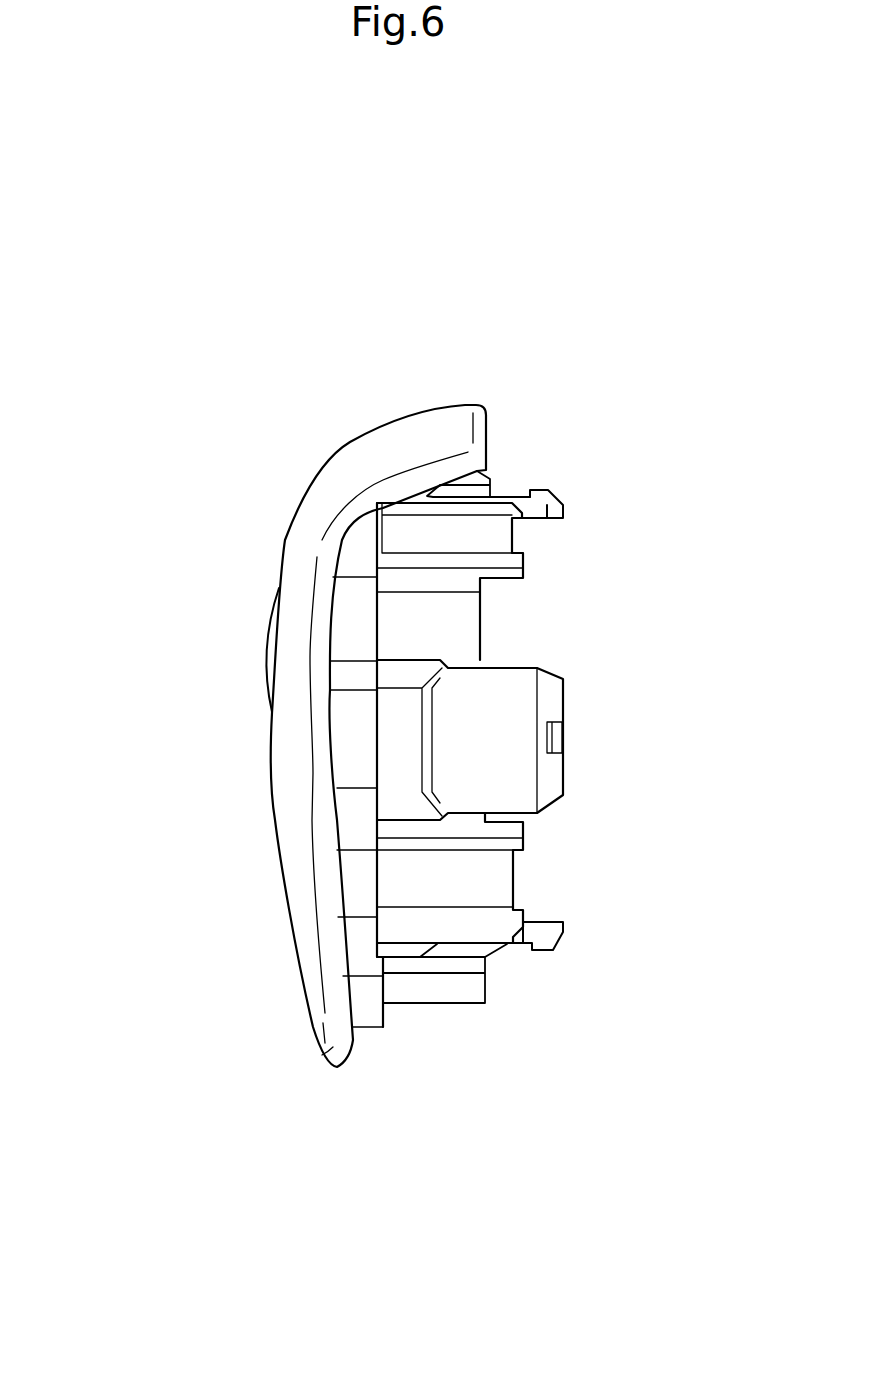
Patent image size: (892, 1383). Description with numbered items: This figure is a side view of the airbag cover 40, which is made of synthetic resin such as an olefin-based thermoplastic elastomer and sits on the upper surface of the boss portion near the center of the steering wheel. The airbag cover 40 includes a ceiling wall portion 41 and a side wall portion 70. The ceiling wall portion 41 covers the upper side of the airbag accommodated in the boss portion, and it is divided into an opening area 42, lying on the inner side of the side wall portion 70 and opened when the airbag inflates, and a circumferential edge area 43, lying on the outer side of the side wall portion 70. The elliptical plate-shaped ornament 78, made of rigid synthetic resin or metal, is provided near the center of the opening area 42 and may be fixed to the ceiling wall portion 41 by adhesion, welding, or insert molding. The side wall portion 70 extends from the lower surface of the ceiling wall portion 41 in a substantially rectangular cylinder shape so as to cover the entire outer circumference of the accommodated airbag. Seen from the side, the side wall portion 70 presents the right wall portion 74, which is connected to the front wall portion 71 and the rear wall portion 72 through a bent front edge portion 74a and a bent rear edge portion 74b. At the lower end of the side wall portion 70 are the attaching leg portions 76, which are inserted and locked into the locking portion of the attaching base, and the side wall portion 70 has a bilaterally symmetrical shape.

The airbag cover 40 is at (323, 380).
The ceiling wall portion 41 is at (260, 1163).
The opening area 42 is at (257, 918).
The circumferential edge area 43 is at (333, 1047).
The side wall portion 70 is at (552, 742).
The front wall portion 71 is at (461, 500).
The rear wall portion 72 is at (425, 993).
The right wall portion 74 is at (452, 623).
The bent front edge portion 74a is at (490, 530).
The bent rear edge portion 74b is at (488, 878).
The attaching leg portion 76 is at (560, 493).
The ornament 78 is at (267, 643).